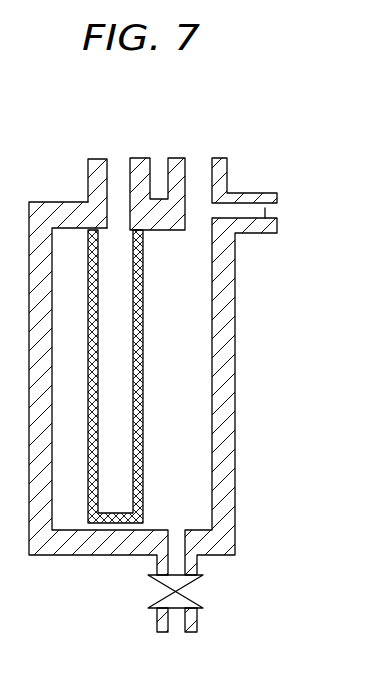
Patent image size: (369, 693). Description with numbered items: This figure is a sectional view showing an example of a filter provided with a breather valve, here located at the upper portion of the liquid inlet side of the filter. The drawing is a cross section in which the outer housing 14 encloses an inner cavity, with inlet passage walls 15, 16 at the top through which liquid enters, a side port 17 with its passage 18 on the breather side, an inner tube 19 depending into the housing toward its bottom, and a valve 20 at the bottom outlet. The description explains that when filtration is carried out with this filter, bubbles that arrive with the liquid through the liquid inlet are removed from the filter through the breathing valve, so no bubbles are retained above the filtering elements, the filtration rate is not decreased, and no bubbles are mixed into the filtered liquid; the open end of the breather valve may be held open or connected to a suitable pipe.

The vessel / container wall 14 is at (224, 337).
The inlet tube wall 15 is at (195, 163).
The inlet tube wall 16 is at (114, 162).
The side port flange 17 is at (247, 212).
The side port passage 18 is at (265, 214).
The inner U-shaped tube 19 is at (143, 391).
The valve 20 is at (205, 585).